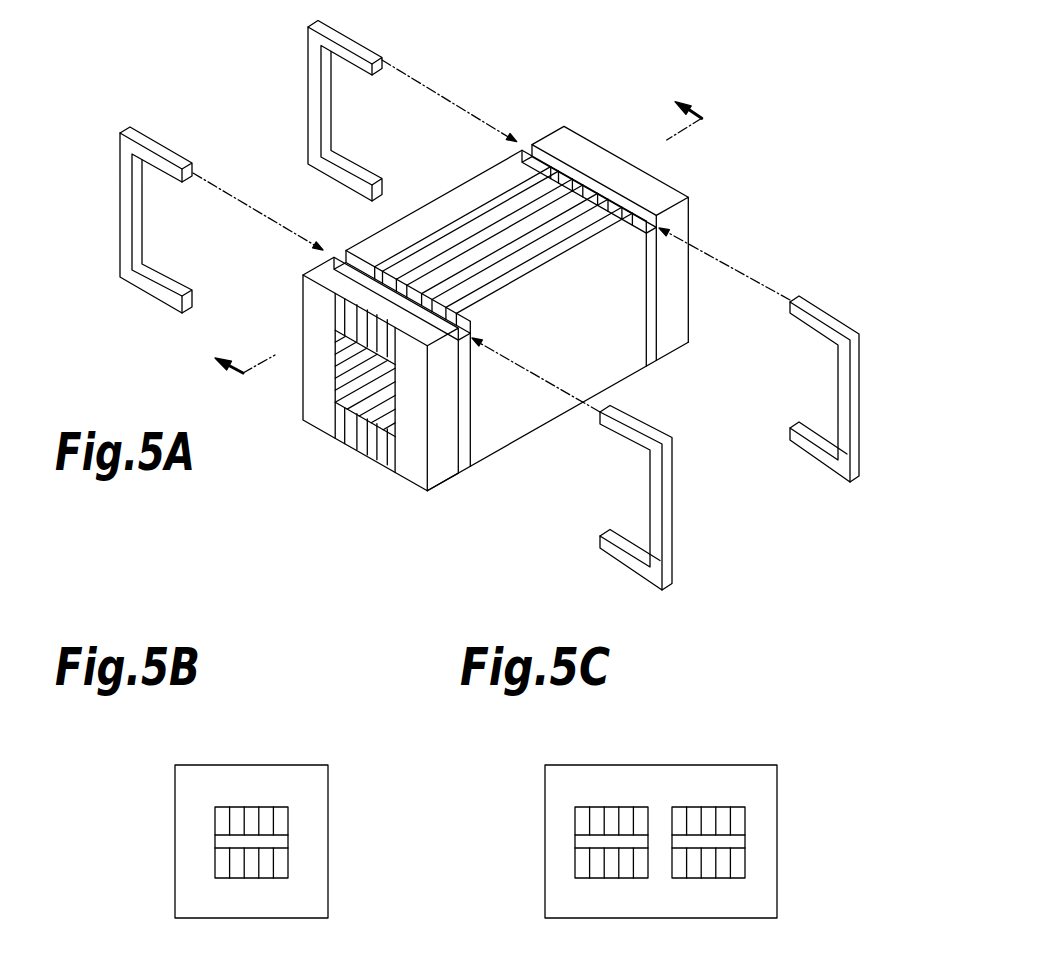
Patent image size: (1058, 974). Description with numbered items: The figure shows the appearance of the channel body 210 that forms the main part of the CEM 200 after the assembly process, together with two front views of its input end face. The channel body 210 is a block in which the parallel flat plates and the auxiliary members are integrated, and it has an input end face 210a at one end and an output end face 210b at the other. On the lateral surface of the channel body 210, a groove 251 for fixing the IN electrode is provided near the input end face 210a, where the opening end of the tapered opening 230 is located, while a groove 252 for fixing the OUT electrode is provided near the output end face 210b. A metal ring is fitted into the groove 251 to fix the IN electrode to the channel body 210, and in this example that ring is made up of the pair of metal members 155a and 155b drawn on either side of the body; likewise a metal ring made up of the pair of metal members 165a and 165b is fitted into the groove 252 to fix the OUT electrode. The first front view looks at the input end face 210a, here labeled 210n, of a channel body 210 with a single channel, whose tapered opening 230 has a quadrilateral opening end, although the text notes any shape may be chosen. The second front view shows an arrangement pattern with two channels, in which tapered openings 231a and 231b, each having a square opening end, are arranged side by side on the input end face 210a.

In FIG. 5A, the CEM 200 is at (419, 174).
In FIG. 5A, the channel body 210 is at (462, 198).
In FIG. 5B, the channel body 210 is at (281, 757).
In FIG. 5C, the channel body 210 is at (763, 760).
In FIG. 5A, the input end face 210a is at (413, 460).
In FIG. 5C, the input end face 210a is at (765, 853).
In FIG. 5A, the output end face 210b is at (692, 292).
In FIG. 5B, the end surface of element body 210n is at (307, 895).
In FIG. 5A, the tapered opening 230 is at (342, 358).
In FIG. 5B, the tapered opening 230 is at (281, 820).
In FIG. 5C, the tapered opening 231a is at (601, 806).
In FIG. 5C, the tapered opening 231b is at (698, 806).
In FIG. 5A, the groove 251 is at (327, 237).
In FIG. 5A, the groove 252 is at (524, 133).
In FIG. 5A, the metal member 155a is at (118, 192).
In FIG. 5A, the metal member 155b is at (675, 515).
In FIG. 5A, the metal member 165a is at (307, 115).
In FIG. 5A, the metal member 165b is at (860, 383).